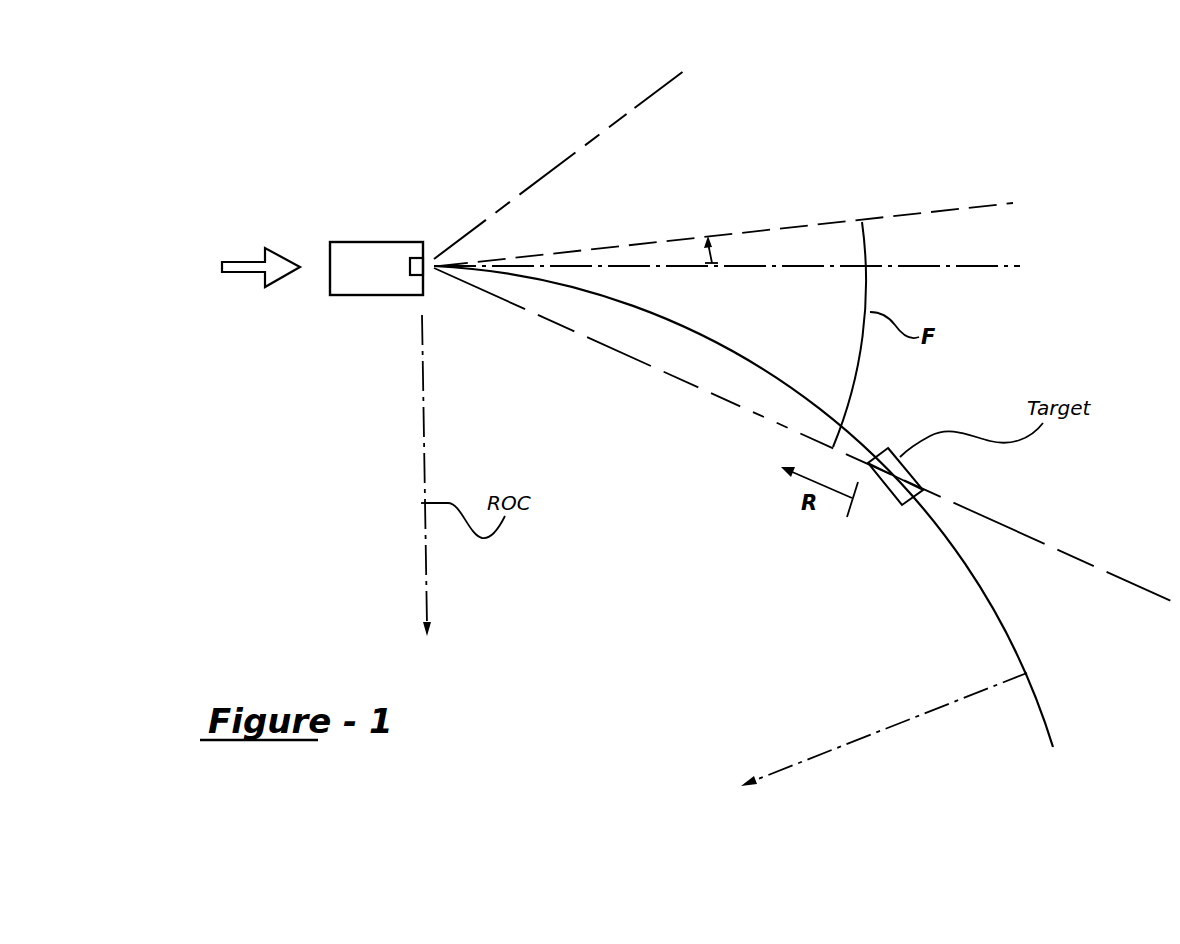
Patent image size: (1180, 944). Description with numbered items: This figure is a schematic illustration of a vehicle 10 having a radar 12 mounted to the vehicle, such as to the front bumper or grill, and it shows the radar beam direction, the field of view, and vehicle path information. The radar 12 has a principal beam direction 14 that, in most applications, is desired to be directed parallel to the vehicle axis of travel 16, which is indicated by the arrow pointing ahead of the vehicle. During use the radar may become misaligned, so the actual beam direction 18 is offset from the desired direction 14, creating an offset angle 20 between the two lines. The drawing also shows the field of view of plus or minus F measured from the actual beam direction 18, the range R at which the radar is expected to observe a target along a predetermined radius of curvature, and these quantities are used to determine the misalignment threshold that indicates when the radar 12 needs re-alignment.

The vehicle 10 is at (363, 243).
The radar 12 is at (411, 261).
The principal beam direction 14 is at (650, 266).
The vehicle axis of travel 16 is at (243, 263).
The actual beam direction 18 is at (813, 223).
The offset angle 20 is at (712, 257).